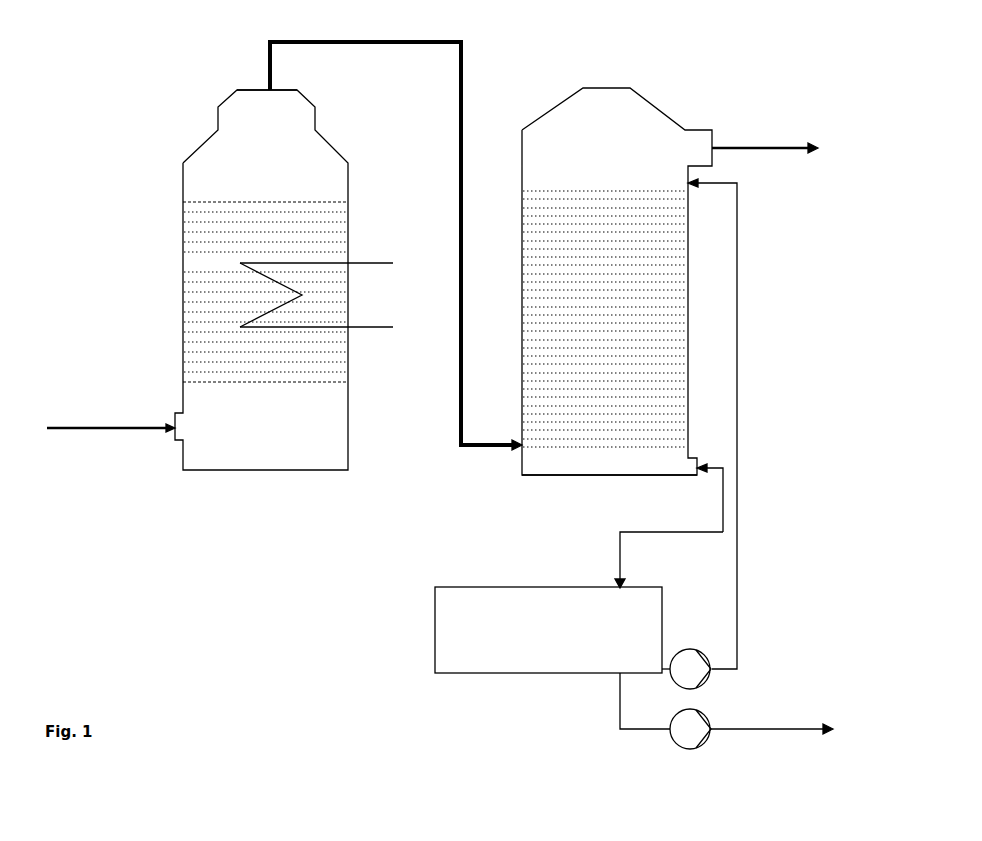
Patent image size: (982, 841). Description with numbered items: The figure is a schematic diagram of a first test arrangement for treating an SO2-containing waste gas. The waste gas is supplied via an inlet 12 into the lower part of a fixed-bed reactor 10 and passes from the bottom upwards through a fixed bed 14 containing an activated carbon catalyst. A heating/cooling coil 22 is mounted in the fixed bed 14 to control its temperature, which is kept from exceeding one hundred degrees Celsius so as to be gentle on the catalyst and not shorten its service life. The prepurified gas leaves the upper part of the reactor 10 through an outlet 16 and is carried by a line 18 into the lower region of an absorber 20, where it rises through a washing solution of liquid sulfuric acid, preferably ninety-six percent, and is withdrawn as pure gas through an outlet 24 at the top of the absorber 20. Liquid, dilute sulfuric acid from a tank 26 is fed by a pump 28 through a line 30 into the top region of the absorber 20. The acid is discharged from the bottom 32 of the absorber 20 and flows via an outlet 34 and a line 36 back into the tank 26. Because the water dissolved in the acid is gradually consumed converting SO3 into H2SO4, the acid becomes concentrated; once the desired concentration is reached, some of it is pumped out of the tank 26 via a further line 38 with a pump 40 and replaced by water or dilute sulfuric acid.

The fixed-bed reactor 10 is at (127, 155).
The inlet 12 is at (175, 440).
The fixed bed 14 is at (203, 253).
The outlet 16 is at (273, 90).
The line 18 is at (467, 72).
The absorber 20 is at (600, 69).
The heating/cooling coil 22 is at (365, 262).
The outlet 24 is at (713, 137).
The tank 26 is at (467, 634).
The pump 28 is at (708, 682).
The line 30 is at (738, 587).
The bottom 32 is at (557, 462).
The outlet 34 is at (702, 465).
The line 36 is at (655, 531).
The further line 38 is at (620, 697).
The pump 40 is at (698, 744).